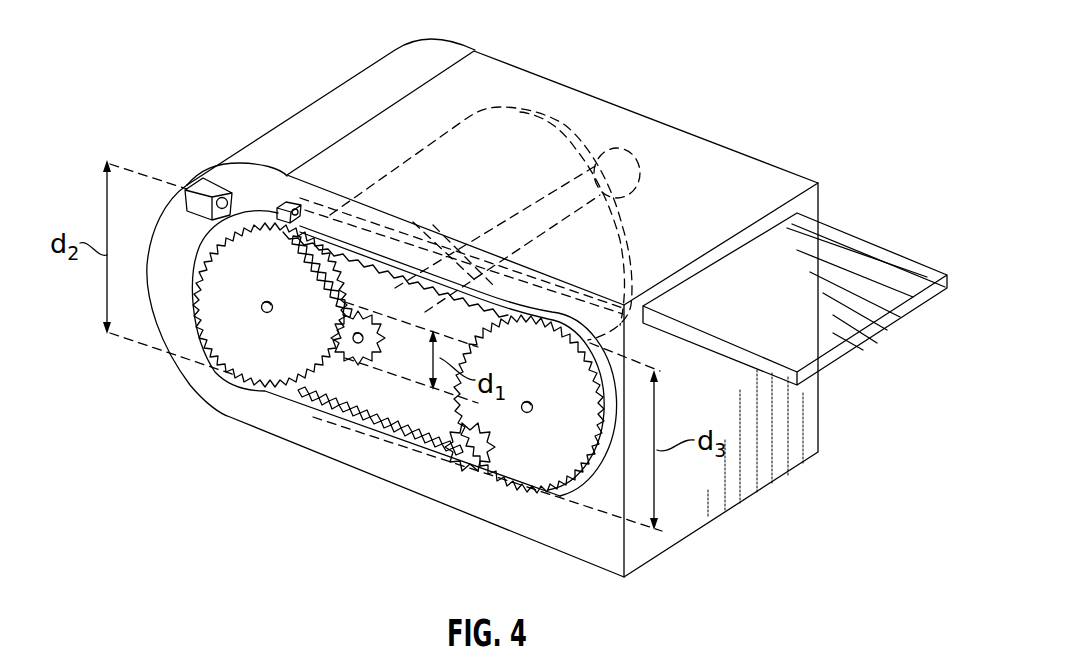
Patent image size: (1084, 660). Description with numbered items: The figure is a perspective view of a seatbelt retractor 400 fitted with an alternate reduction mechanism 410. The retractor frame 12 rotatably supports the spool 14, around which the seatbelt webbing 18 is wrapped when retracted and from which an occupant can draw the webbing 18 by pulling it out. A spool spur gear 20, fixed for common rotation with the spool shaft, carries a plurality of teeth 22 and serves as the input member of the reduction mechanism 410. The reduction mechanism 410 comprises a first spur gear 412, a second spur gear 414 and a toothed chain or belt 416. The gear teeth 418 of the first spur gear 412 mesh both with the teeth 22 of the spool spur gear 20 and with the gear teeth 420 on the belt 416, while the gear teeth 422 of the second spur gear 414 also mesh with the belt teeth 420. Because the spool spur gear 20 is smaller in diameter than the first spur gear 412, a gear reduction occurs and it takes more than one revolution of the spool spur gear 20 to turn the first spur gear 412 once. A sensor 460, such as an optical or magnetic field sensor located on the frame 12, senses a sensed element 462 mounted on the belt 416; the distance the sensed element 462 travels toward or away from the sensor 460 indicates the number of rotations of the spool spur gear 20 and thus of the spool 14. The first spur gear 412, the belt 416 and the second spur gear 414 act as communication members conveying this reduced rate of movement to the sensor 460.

The seatbelt retractor 400 is at (185, 43).
The alternate reduction mechanism 410 is at (147, 152).
The retractor frame 12 is at (730, 512).
The spool 14 is at (521, 208).
The seatbelt webbing 18 is at (853, 237).
The spool spur gear 20 is at (337, 418).
The teeth 22 is at (360, 302).
The first spur gear 412 is at (260, 372).
The second spur gear 414 is at (520, 453).
The toothed chain or belt 416 is at (393, 440).
The gear teeth 418 is at (323, 237).
The gear teeth 420 is at (303, 397).
The gear teeth 422 is at (462, 442).
The sensor 460 is at (203, 180).
The sensed element 462 is at (291, 206).